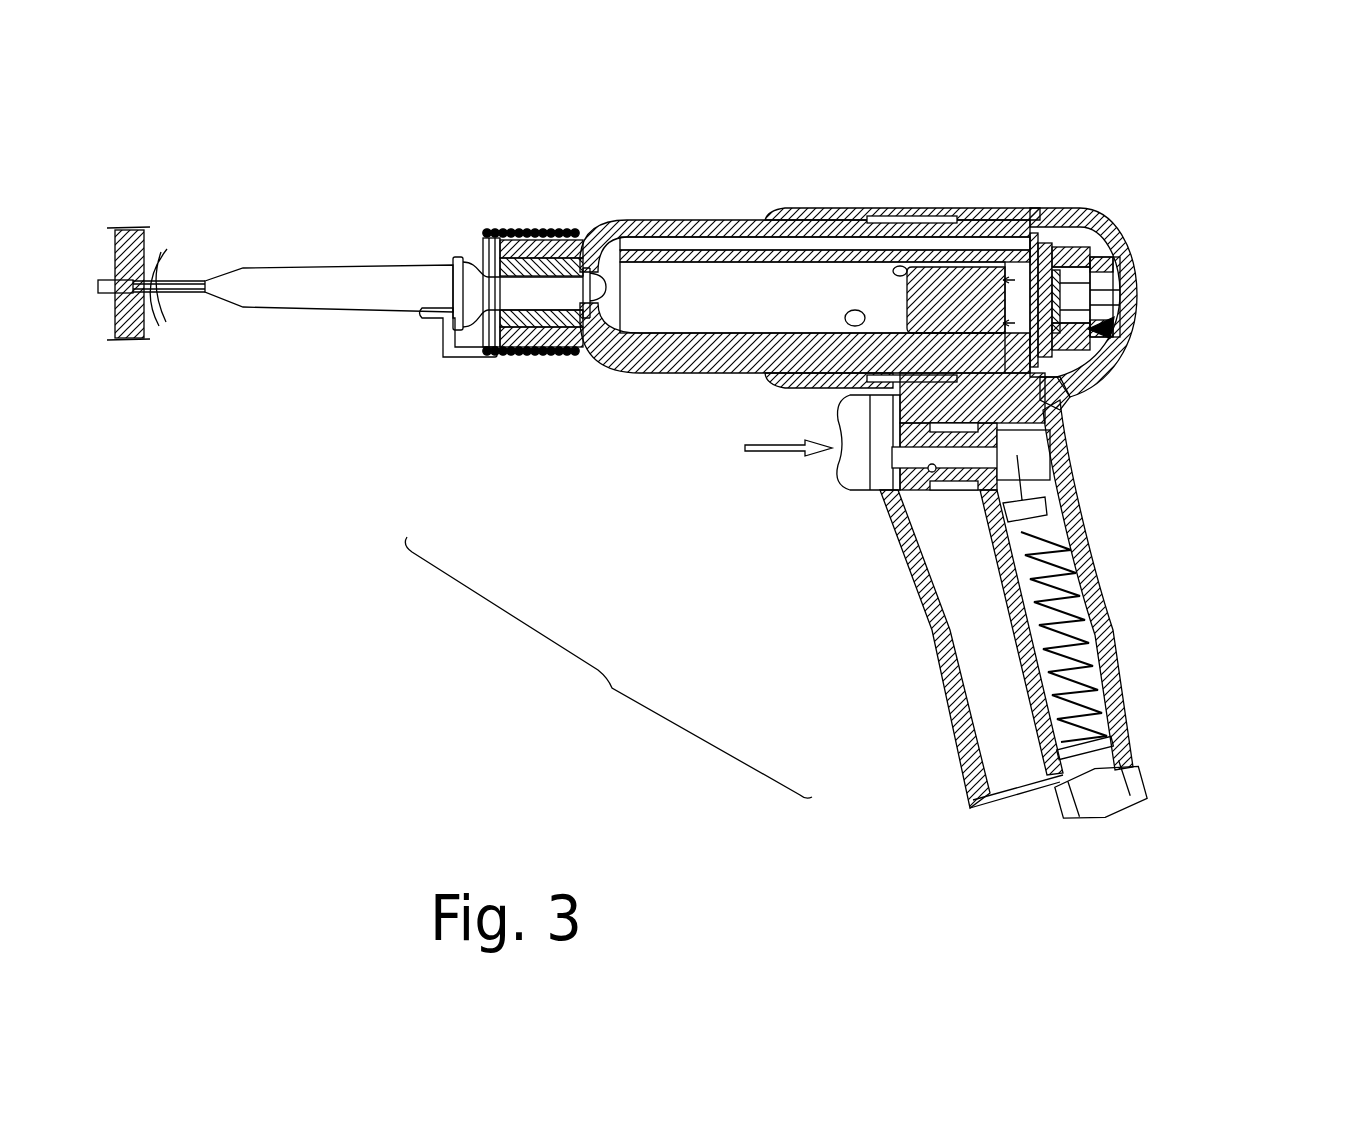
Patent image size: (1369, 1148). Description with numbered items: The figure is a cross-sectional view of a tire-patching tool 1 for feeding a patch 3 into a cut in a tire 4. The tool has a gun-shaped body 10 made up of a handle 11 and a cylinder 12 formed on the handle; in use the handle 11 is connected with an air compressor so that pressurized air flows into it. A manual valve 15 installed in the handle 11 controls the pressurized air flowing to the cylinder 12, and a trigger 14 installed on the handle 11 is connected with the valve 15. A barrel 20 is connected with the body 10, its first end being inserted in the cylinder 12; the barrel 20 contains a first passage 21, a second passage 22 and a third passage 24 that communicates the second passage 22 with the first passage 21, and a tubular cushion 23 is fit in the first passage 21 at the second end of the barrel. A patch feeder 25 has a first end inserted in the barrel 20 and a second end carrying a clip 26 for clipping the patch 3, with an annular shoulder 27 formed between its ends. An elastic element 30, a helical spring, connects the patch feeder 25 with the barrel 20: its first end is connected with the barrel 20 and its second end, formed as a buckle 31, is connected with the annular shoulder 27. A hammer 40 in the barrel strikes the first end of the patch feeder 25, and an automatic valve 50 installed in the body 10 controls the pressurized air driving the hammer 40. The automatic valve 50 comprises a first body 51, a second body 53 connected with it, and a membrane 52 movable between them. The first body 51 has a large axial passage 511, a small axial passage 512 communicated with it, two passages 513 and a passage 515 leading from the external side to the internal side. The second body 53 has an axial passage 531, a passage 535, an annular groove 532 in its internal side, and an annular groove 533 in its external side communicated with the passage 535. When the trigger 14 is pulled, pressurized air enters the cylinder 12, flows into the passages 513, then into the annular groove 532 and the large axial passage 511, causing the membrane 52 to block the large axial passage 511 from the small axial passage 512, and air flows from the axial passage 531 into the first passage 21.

The tire-patching tool 1 is at (608, 667).
The patch 3 is at (166, 249).
The tire 4 is at (121, 232).
The body 10 is at (736, 570).
The handle 11 is at (933, 625).
The cylinder 12 is at (983, 208).
The trigger 14 is at (853, 488).
The manual valve 15 is at (1105, 560).
The barrel 20 is at (730, 214).
The first passage 21 is at (692, 312).
The second passage 22 is at (630, 240).
The tubular cushion 23 is at (538, 330).
The third passage 24 is at (648, 252).
The patch feeder 25 is at (348, 262).
The clip 26 is at (168, 312).
The annular shoulder 27 is at (459, 260).
The elastic element 30 is at (491, 364).
The buckle 31 is at (430, 318).
The hammer 40 is at (930, 302).
The automatic valve 50 is at (1130, 344).
The first body 51 is at (1103, 349).
The membrane 52 is at (1122, 337).
The second body 53 is at (1075, 553).
The large axial passage 511 is at (1090, 356).
The small axial passage 512 is at (1080, 318).
The passages 513 is at (1075, 245).
The passage 515 is at (1085, 297).
The axial passage 531 is at (1068, 392).
The annular groove 532 is at (1085, 272).
The annular groove 533 is at (1048, 228).
The passage 535 is at (1028, 232).